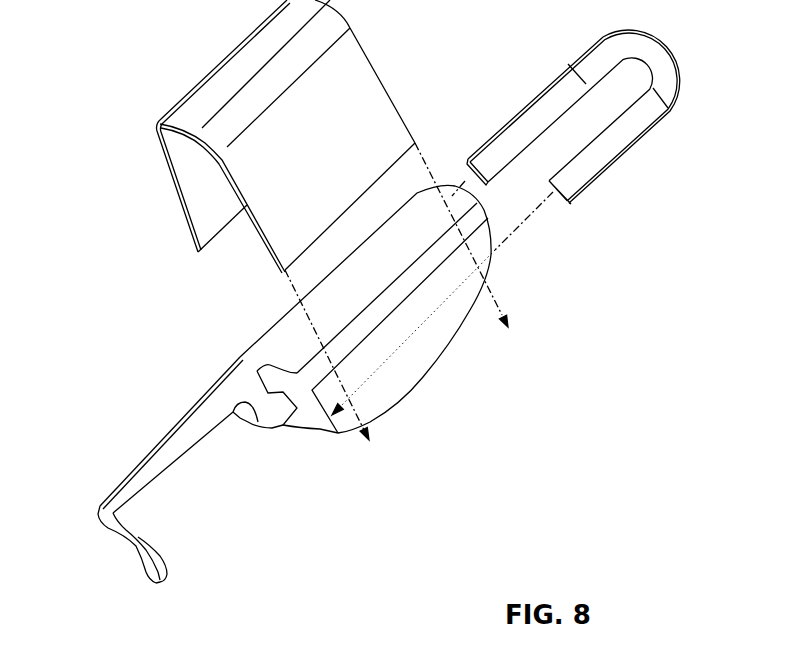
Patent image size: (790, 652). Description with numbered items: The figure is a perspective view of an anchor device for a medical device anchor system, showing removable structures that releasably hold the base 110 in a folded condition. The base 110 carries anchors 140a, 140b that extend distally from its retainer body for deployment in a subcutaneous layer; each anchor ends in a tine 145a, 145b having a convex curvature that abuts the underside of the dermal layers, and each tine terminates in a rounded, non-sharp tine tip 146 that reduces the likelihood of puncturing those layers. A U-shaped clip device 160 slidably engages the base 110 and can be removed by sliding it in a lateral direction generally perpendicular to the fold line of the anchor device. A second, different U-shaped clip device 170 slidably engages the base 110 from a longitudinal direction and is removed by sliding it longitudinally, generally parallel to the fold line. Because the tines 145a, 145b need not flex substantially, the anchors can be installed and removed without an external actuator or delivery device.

The base 110 is at (338, 449).
The anchor 140a is at (175, 449).
The anchor 140b is at (146, 438).
The tine 145a is at (158, 548).
The tine 145b is at (130, 545).
The tine tip 146 is at (167, 567).
The U-shaped clip device 160 is at (200, 83).
The U-shaped clip device 170 is at (650, 123).